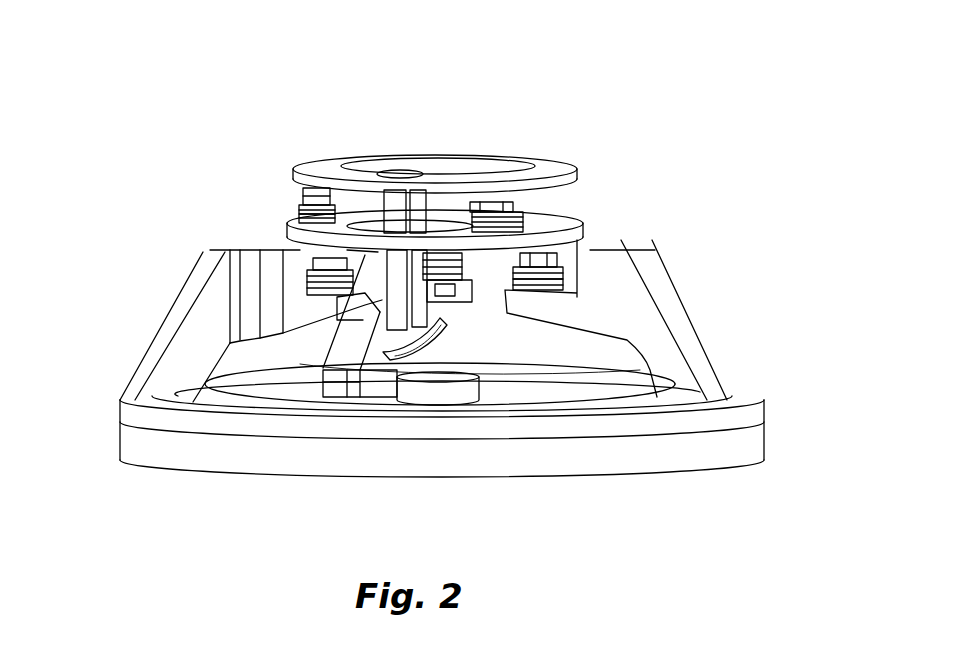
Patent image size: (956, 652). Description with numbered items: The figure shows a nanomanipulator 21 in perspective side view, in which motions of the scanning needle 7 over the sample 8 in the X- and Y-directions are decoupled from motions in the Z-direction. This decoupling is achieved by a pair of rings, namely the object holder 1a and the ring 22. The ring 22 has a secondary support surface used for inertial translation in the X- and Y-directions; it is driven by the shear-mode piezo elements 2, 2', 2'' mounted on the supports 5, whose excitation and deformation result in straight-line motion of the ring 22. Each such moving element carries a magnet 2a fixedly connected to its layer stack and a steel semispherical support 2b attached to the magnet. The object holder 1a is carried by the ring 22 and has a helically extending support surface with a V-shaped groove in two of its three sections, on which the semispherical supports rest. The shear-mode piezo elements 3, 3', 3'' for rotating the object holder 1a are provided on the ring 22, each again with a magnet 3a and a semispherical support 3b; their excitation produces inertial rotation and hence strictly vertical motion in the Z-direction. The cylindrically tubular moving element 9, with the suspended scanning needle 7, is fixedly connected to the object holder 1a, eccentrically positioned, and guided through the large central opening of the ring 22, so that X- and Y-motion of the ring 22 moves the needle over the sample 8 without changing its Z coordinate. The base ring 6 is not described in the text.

The nanomanipulator 21 is at (495, 197).
The object holder 1a is at (580, 163).
The ring 22 is at (593, 223).
The shear-mode piezo element 3 is at (261, 218).
The magnet 3a is at (300, 203).
The semispherical support 3b is at (300, 187).
The shear-mode piezo element 3' is at (549, 209).
The shear-mode piezo element 3'' is at (620, 159).
The shear-mode piezo element 2 is at (641, 269).
The magnet 2a is at (563, 260).
The semispherical support 2b is at (560, 245).
The shear-mode piezo element 2' is at (243, 267).
The shear-mode piezo element 2'' is at (643, 314).
The support 5 is at (168, 320).
The base ring 6 is at (745, 447).
The scanning needle 7 is at (437, 357).
The sample 8 is at (397, 388).
The cylindrically tubular moving element 9 is at (430, 307).